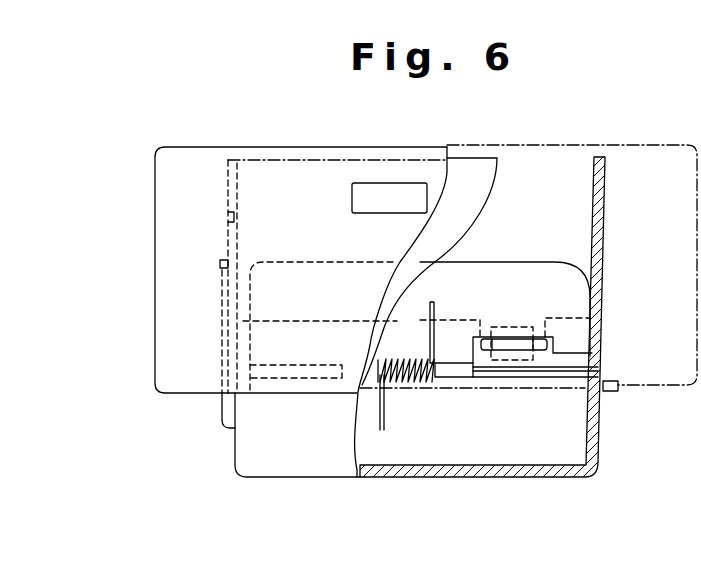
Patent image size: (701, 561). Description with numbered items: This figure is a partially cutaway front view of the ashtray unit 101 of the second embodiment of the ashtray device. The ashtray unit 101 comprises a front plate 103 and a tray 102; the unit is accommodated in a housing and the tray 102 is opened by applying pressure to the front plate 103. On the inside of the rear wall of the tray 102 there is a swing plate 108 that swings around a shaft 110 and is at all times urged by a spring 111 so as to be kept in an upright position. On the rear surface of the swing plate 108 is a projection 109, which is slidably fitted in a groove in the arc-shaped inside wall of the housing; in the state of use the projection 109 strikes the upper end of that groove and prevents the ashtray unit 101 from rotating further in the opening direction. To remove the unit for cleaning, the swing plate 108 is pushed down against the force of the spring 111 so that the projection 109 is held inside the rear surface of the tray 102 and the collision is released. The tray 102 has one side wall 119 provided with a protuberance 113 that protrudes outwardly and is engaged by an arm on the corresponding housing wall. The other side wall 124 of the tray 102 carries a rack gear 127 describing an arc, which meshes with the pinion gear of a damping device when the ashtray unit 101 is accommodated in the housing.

The ashtray unit 101 is at (327, 141).
The tray 102 is at (553, 182).
The front plate 103 is at (208, 155).
The swing plate 108 is at (540, 272).
The projection 109 is at (503, 327).
The shaft 110 is at (516, 373).
The spring 111 is at (408, 384).
The protuberance 113 is at (613, 390).
The side wall 119 is at (605, 268).
The other side wall 124 is at (230, 217).
The rack gear 127 is at (222, 264).